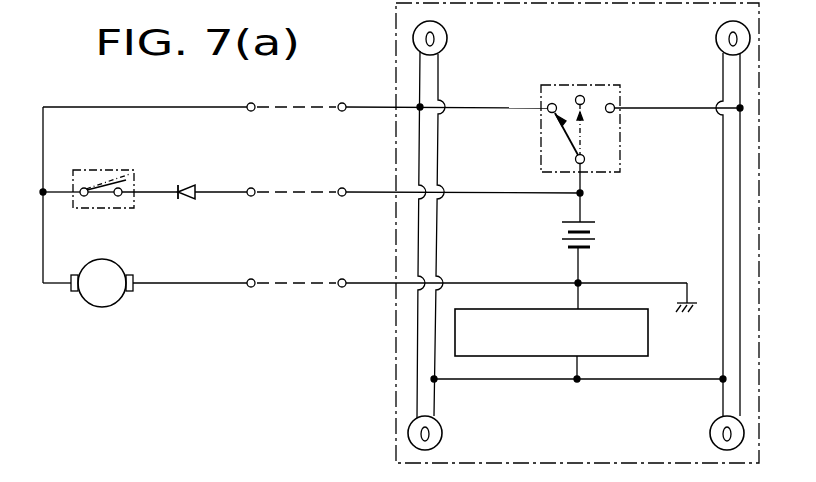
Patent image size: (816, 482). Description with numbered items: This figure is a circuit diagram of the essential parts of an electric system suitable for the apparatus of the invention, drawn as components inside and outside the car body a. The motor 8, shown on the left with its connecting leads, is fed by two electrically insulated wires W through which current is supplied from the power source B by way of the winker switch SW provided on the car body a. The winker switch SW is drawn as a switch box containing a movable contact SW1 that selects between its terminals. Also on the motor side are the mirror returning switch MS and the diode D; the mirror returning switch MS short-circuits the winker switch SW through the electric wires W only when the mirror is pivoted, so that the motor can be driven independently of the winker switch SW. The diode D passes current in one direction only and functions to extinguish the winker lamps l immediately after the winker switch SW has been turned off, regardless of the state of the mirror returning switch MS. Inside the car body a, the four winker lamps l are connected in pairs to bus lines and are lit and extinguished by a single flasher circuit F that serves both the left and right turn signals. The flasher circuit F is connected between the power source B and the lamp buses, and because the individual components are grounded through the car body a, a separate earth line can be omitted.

The car body a is at (396, 52).
The electrically insulated wires W is at (223, 108).
The mirror returning switch MS is at (84, 170).
The diode D is at (189, 201).
The motor 8 is at (102, 307).
The winker lamps l is at (446, 33).
The winker switch SW is at (575, 85).
The movable contact of switch SW1 is at (548, 105).
The power source B is at (597, 233).
The flasher circuit F is at (648, 343).